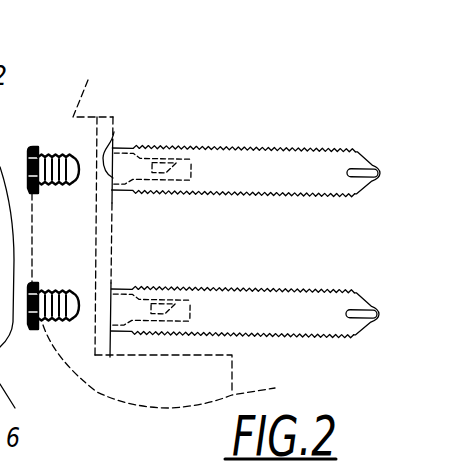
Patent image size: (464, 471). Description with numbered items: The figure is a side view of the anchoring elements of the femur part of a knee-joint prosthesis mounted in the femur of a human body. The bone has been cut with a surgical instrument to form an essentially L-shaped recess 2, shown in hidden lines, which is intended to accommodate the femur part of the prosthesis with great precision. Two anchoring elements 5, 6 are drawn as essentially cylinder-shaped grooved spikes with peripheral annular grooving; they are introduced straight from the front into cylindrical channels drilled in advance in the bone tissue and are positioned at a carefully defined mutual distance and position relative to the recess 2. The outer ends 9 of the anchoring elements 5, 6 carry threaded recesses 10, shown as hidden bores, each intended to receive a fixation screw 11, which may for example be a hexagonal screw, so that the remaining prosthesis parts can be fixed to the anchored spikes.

The L-shaped recess 2 is at (47, 148).
The anchoring element 5 is at (243, 158).
The anchoring element 6 is at (321, 328).
The outer end 9 is at (114, 132).
The threaded recess 10 is at (188, 146).
The fixation screw 11 is at (17, 157).